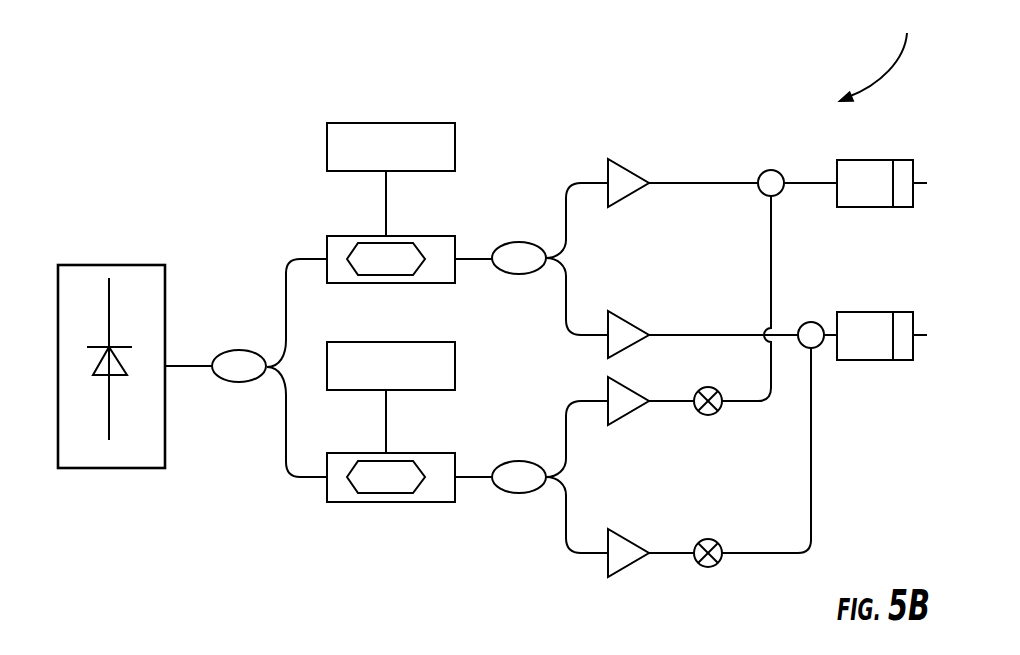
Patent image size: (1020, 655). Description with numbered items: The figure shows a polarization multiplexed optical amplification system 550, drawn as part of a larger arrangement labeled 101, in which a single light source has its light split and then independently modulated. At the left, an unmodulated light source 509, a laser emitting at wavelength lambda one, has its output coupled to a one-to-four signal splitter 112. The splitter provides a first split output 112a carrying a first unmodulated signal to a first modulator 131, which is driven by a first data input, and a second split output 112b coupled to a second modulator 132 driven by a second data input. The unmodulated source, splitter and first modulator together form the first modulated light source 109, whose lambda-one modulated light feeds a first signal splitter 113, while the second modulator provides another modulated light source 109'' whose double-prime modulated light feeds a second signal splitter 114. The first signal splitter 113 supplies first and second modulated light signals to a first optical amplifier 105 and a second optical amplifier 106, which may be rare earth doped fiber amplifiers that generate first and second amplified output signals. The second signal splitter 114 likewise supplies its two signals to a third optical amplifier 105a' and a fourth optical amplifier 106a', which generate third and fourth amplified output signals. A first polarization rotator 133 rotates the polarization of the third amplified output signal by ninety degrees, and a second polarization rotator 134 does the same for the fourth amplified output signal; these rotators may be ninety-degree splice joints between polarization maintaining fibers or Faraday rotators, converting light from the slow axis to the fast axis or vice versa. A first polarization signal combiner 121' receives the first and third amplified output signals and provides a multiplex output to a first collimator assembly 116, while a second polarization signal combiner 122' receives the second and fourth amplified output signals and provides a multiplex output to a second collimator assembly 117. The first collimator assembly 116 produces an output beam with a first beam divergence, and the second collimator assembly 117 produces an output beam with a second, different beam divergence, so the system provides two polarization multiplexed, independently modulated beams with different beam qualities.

The optical system 101 is at (646, 5).
The polarization multiplexed optical amplification system 550 is at (882, 52).
The unmodulated light source 509 is at (93, 468).
The four signal splitter 112 is at (228, 352).
The first split output 112a is at (273, 362).
The second split output 112b is at (273, 372).
The first modulator 131 is at (327, 270).
The second modulator 132 is at (327, 488).
The first modulated light source 109 is at (478, 292).
The λ1 modulated light source 109'' is at (481, 509).
The first signal splitter 113 is at (520, 244).
The second signal splitter 114 is at (520, 463).
The first optical amplifier 105 is at (632, 168).
The second optical amplifier 106 is at (632, 320).
The third optical amplifier 105a' is at (651, 381).
The fourth optical amplifier 106a' is at (651, 533).
The first polarization rotator 133 is at (708, 415).
The second polarization rotator 134 is at (708, 567).
The first polarization signal combiner 121' is at (779, 259).
The polarization signal combiner 122' is at (787, 411).
The first collimator assembly 116 is at (867, 160).
The second collimator assembly 117 is at (867, 312).